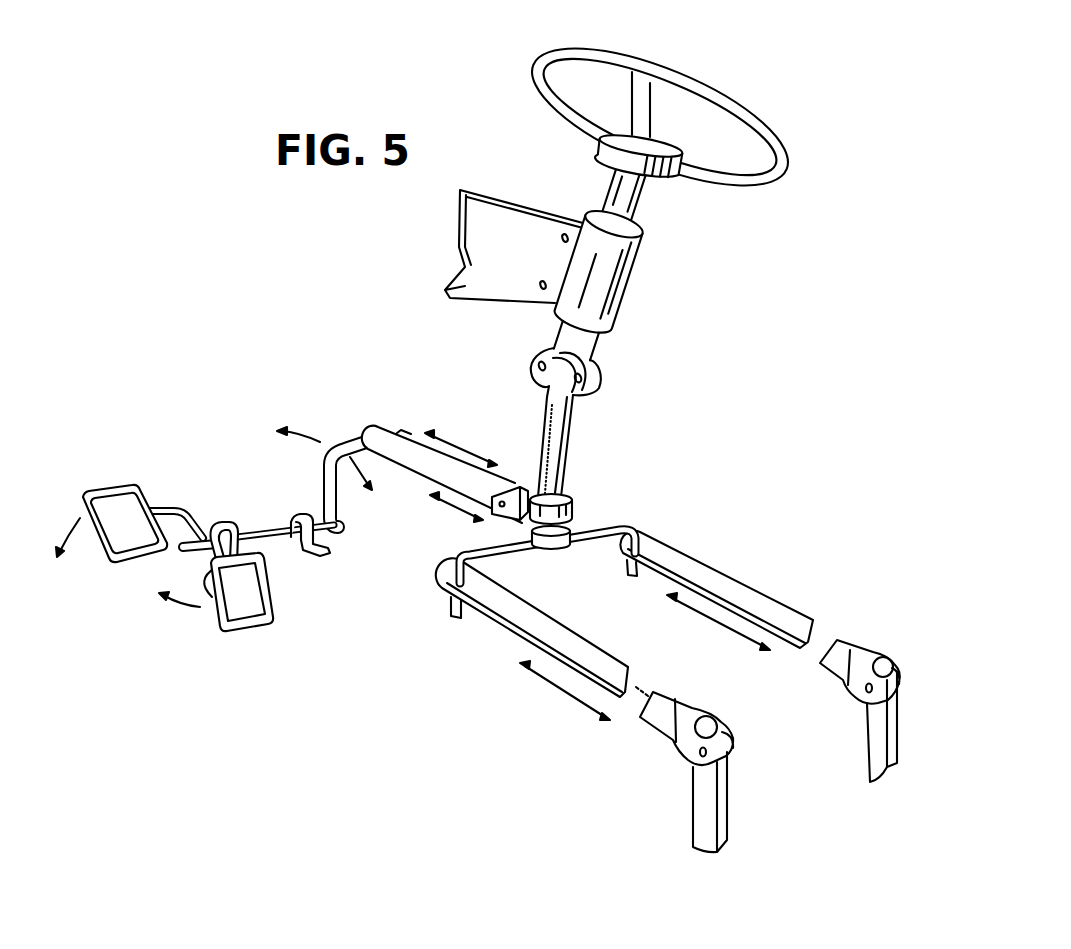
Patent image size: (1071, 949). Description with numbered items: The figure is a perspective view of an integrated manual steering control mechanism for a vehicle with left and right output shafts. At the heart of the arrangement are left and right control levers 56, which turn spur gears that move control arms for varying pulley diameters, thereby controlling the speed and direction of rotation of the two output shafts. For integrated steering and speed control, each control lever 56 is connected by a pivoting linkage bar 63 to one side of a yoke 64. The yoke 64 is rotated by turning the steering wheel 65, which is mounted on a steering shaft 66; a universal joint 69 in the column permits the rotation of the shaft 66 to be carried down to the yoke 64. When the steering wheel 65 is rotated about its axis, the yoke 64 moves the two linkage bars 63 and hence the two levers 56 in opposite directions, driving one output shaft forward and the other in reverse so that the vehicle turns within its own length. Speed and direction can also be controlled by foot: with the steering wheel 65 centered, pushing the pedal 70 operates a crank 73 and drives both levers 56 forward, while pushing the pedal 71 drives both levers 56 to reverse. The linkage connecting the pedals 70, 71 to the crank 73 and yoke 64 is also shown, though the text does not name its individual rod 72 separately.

The control lever 56 is at (707, 828).
The pivoting linkage bar 63 is at (543, 633).
The yoke 64 is at (488, 550).
The steering wheel 65 is at (724, 102).
The steering shaft 66 is at (622, 207).
The universal joint 69 is at (538, 360).
The pedal 70 is at (147, 497).
The pedal 71 is at (268, 588).
The pedal linkage rod 72 is at (430, 475).
The crank 73 is at (338, 508).